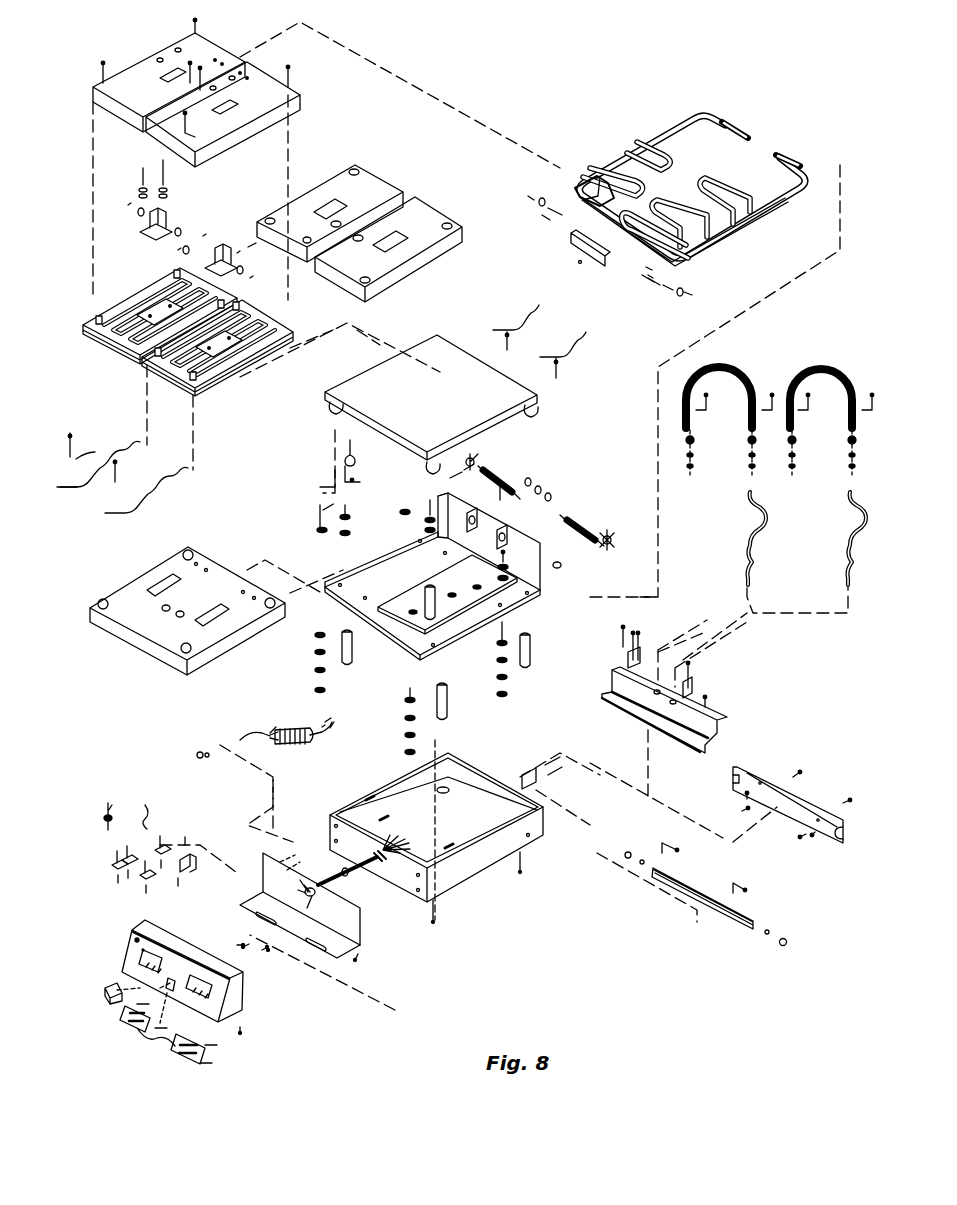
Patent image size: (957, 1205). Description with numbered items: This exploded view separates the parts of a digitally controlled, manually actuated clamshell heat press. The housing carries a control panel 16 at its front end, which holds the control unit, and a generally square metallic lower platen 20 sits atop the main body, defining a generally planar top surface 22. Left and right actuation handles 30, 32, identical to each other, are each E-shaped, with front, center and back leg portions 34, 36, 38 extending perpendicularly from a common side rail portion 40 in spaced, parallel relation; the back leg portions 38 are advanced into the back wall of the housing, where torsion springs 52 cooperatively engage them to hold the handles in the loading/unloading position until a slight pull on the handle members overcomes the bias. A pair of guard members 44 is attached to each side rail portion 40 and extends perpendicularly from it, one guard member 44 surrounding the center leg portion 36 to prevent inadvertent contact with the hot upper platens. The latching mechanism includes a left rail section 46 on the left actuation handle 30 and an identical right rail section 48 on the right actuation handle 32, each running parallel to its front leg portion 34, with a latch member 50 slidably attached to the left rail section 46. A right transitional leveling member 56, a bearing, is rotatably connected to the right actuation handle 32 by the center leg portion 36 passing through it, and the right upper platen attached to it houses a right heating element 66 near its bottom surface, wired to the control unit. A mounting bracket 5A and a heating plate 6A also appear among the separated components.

The mounting bracket 5A is at (138, 232).
The right transitional leveling member 56 is at (222, 243).
The heating plate 6A is at (108, 332).
The right heating element 66 is at (208, 382).
The lower platen 20 is at (411, 378).
The top surface 22 is at (365, 403).
The left actuation handle 30 is at (701, 182).
The right actuation handle 32 is at (822, 168).
The front leg portion 34 is at (575, 240).
The center leg portion 36 is at (660, 165).
The back leg portion 38 is at (795, 160).
The side rail portion 40 is at (618, 166).
The guard member 44 is at (705, 192).
The left rail section 46 is at (585, 182).
The right rail section 48 is at (652, 255).
The latch member 50 is at (600, 258).
The torsion spring 52 is at (515, 490).
The control panel 16 is at (122, 963).